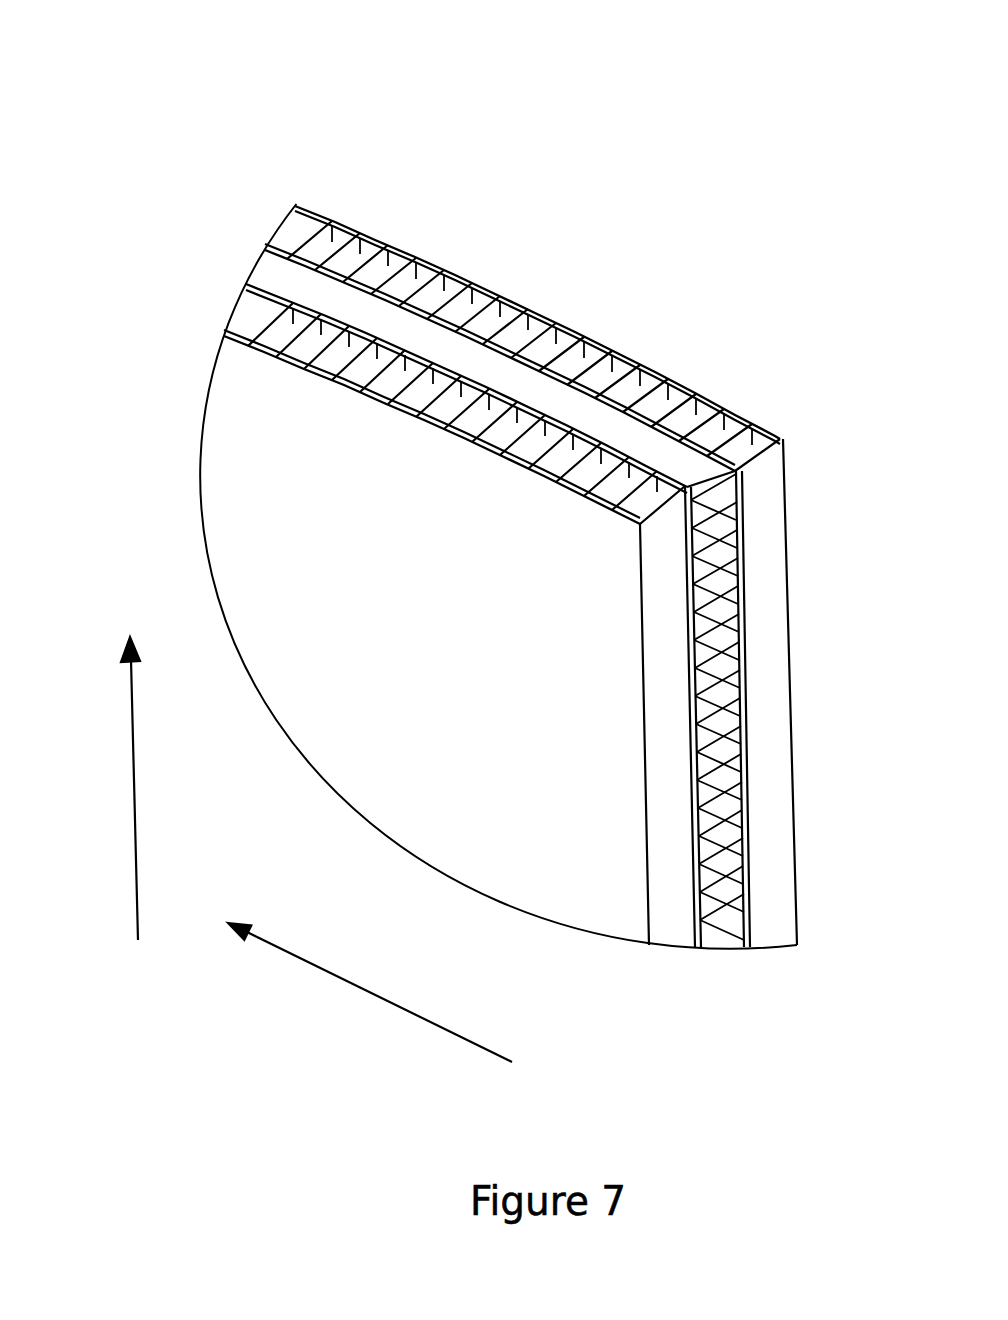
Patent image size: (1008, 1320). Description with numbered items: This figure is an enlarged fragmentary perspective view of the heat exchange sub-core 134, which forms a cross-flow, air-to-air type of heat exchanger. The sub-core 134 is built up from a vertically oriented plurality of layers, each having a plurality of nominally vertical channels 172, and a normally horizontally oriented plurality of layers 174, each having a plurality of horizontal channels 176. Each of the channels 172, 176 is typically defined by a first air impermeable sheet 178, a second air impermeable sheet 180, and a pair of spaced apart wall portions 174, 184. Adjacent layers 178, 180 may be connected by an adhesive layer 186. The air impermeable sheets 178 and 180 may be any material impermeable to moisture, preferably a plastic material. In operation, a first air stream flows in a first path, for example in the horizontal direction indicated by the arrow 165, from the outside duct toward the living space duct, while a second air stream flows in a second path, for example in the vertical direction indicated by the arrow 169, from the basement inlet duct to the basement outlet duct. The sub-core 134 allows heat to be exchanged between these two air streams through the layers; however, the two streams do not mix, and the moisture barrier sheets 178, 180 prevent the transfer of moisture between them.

The heat exchange sub-core 134 is at (539, 158).
The vertical channels 172 is at (320, 337).
The wall portion 184 is at (425, 292).
The first air impermeable sheet 178 is at (621, 380).
The second air impermeable sheet 180 is at (704, 414).
The adhesive layer 186 is at (738, 534).
The horizontally oriented layers 174 is at (737, 628).
The horizontal channels 176 is at (738, 736).
The arrow 169 is at (95, 788).
The arrow 165 is at (370, 992).